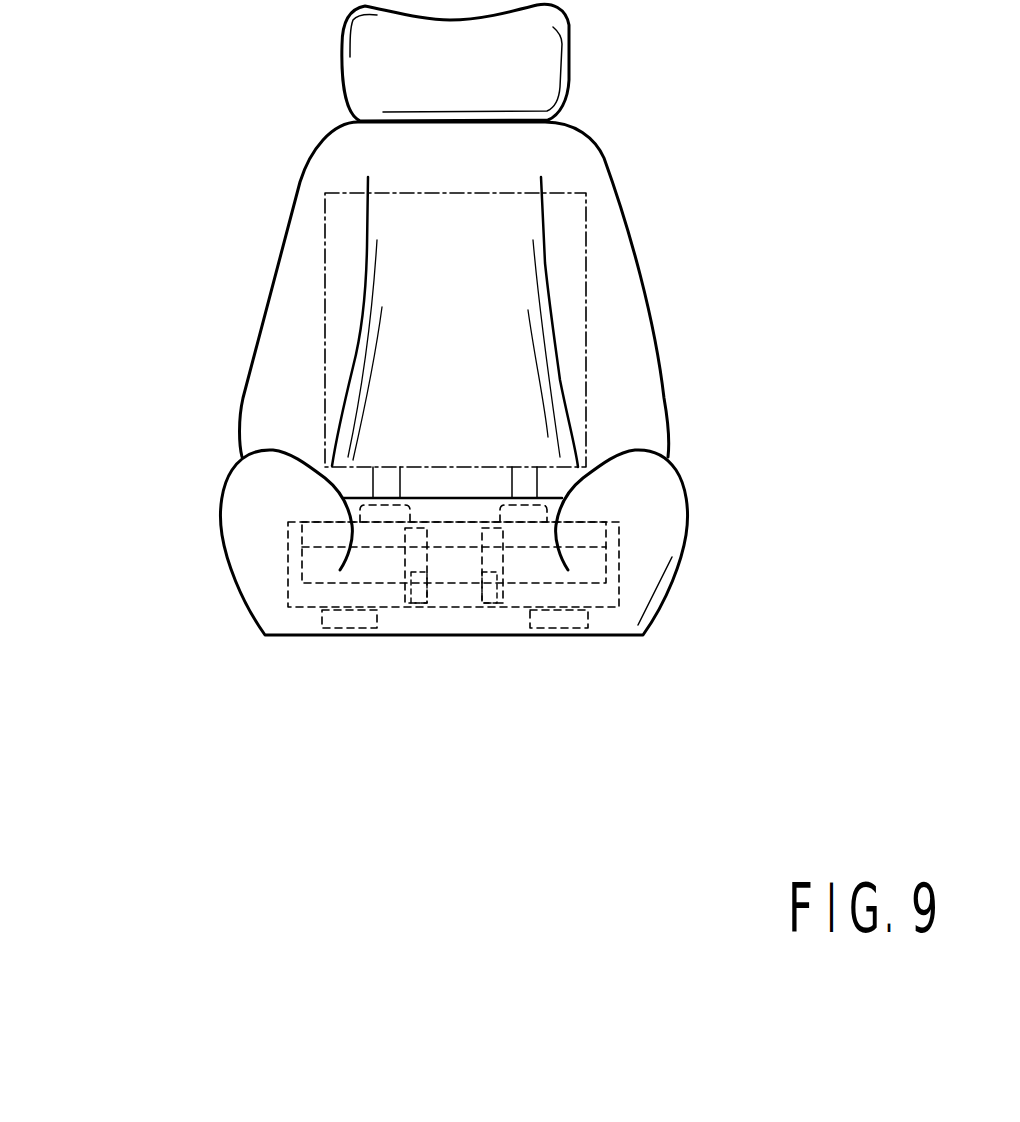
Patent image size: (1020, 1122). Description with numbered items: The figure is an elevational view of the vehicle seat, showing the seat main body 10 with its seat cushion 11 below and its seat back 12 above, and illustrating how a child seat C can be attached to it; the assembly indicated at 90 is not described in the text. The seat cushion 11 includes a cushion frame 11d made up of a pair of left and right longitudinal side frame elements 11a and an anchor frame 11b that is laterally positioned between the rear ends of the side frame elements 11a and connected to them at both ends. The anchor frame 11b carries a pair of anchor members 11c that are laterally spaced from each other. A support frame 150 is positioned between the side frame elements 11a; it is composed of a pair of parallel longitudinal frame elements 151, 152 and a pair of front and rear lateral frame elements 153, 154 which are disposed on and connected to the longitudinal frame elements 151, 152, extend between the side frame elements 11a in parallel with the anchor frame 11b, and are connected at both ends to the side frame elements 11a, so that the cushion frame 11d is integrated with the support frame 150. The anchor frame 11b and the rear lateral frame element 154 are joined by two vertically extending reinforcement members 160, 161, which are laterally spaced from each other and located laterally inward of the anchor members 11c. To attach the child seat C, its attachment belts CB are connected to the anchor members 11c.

The seat main body 10 is at (712, 158).
The seat cushion 11 is at (263, 583).
The side frame elements 11a is at (288, 543).
The anchor frame 11b is at (587, 537).
The anchor members 11c is at (355, 512).
The cushion frame 11d is at (287, 559).
The seat back 12 is at (648, 303).
The seat belt device 90 is at (153, 215).
The support frame 150 is at (287, 613).
The longitudinal frame element 151 is at (348, 620).
The longitudinal frame element 152 is at (553, 620).
The front lateral frame element 153 is at (620, 602).
The rear lateral frame element 154 is at (620, 602).
The reinforcement member 160 is at (417, 605).
The reinforcement member 161 is at (495, 620).
The child seat C is at (324, 303).
The attachment belts CB is at (385, 483).